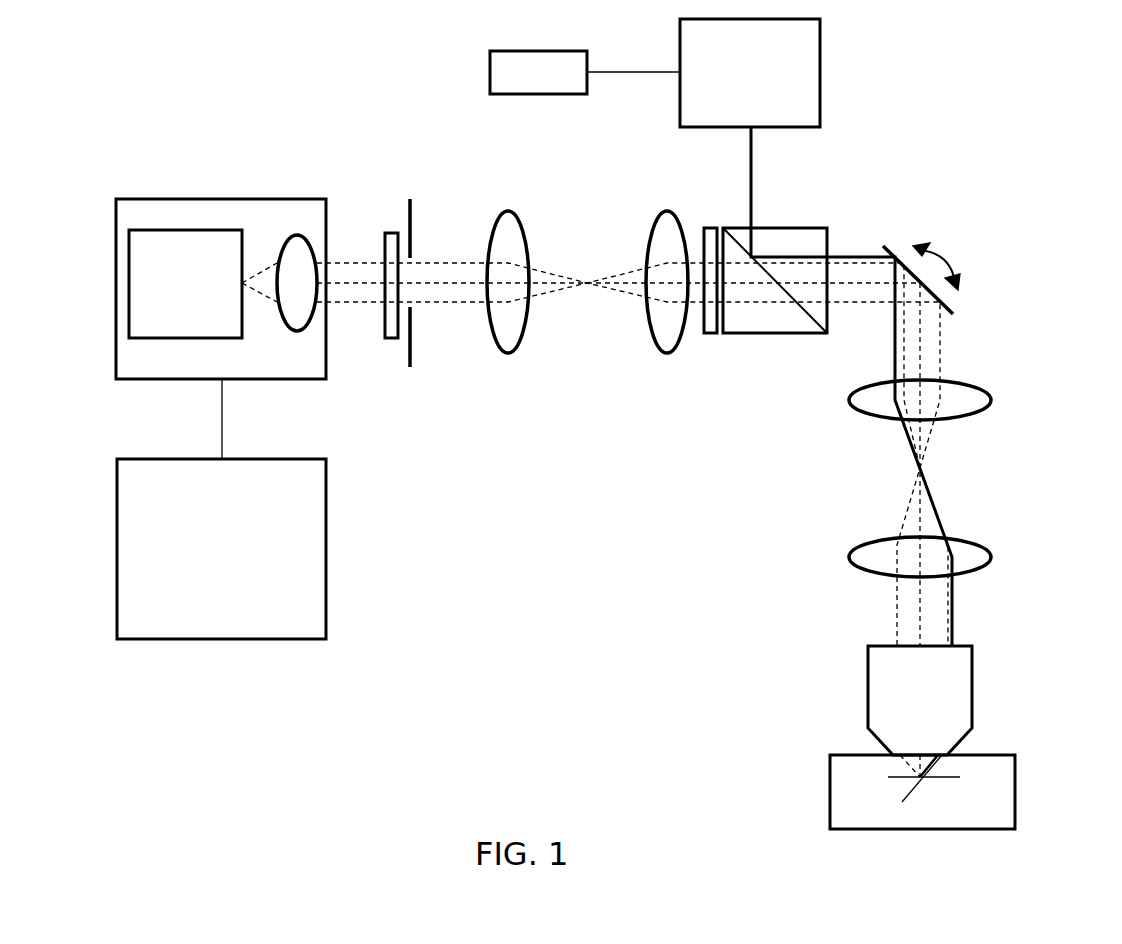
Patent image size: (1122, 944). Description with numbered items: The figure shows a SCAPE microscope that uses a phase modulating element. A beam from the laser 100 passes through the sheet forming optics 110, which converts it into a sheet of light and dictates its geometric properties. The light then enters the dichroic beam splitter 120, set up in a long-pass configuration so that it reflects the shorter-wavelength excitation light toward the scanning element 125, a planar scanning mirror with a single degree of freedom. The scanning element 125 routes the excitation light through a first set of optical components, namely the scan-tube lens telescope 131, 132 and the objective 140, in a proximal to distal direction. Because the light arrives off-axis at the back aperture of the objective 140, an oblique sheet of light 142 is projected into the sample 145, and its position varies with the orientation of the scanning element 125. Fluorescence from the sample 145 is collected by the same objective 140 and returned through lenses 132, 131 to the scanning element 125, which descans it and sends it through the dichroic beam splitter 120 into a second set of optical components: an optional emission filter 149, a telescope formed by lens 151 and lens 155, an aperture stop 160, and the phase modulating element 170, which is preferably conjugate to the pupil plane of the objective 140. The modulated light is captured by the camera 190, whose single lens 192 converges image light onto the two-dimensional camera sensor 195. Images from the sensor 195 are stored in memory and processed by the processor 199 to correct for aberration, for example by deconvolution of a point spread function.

The laser 100 is at (510, 50).
The sheet forming optics 110 is at (822, 70).
The dichroic beam splitter 120 is at (830, 227).
The scanning element 125 is at (960, 305).
The scan-tube lens telescope lens 131 is at (983, 413).
The scan-tube lens telescope lens 132 is at (987, 568).
The objective 140 is at (973, 697).
The oblique sheet of light 142 is at (913, 795).
The sample 145 is at (1015, 790).
The emission filter 149 is at (712, 335).
The lens 151 is at (665, 210).
The lens 155 is at (512, 212).
The aperture stop 160 is at (412, 195).
The phase modulating element 170 is at (393, 232).
The camera 190 is at (210, 198).
The lens 192 is at (297, 233).
The 2D camera sensor 195 is at (157, 228).
The processor 199 is at (133, 456).